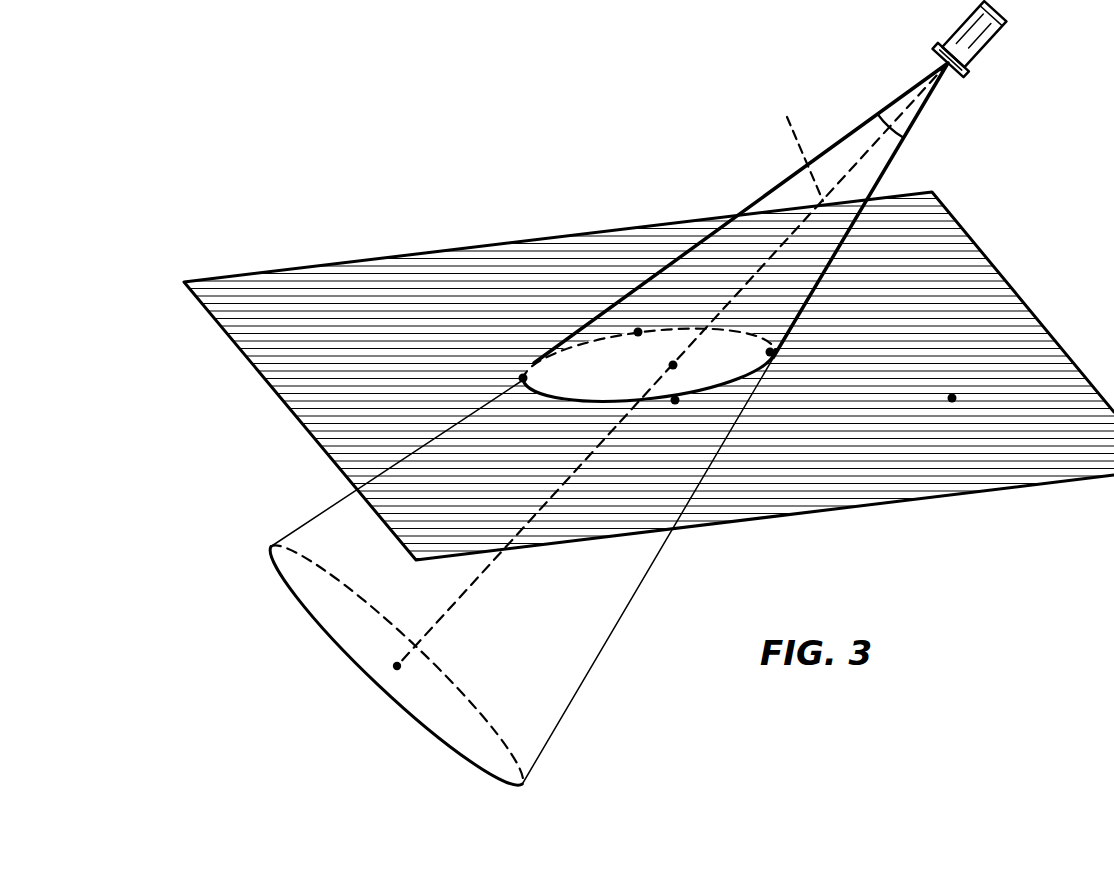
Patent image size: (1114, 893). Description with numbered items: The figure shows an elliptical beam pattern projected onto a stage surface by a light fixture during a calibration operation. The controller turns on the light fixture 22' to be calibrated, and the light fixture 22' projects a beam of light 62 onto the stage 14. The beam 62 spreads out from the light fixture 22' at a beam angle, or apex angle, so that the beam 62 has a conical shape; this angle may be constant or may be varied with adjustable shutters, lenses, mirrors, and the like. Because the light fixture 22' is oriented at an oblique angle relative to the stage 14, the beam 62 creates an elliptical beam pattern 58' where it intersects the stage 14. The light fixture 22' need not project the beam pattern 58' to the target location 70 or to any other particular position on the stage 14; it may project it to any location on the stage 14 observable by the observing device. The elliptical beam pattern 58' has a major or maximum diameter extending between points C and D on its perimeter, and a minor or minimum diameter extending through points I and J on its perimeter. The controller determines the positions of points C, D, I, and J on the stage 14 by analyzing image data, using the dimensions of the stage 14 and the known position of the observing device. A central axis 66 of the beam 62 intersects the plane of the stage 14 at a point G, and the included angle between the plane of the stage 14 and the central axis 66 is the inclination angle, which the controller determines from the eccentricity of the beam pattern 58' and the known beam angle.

The stage 14 is at (400, 280).
The light fixture 22' is at (1022, 44).
The elliptical beam pattern 58' is at (639, 274).
The beam of light 62 is at (763, 190).
The central axis 66 is at (792, 137).
The target location 70 is at (952, 398).
The point D is at (523, 378).
The point I is at (638, 332).
The point C is at (770, 352).
The point G is at (673, 365).
The point J is at (675, 400).